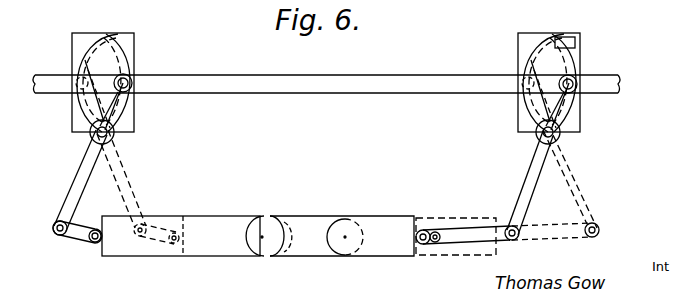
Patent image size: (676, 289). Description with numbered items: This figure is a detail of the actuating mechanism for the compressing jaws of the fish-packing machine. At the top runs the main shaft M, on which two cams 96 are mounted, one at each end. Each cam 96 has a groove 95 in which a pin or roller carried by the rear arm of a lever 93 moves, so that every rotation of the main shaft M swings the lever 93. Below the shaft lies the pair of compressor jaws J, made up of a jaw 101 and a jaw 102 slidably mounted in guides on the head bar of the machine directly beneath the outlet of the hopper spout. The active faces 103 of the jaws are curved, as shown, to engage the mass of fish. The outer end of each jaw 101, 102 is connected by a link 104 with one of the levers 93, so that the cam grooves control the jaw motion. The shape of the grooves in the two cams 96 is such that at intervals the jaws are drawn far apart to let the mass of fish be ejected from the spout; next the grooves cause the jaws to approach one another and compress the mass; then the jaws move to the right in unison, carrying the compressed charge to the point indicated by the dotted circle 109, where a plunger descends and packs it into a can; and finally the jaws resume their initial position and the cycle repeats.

The main shaft M is at (215, 75).
The cam 96 is at (78, 33).
The groove 95 is at (115, 42).
The lever 93 is at (80, 163).
The link 104 is at (165, 228).
The compressor jaws J is at (258, 222).
The jaw 101 is at (181, 236).
The jaw 102 is at (407, 250).
The active face 103 is at (262, 230).
The dotted circle 109 is at (351, 232).